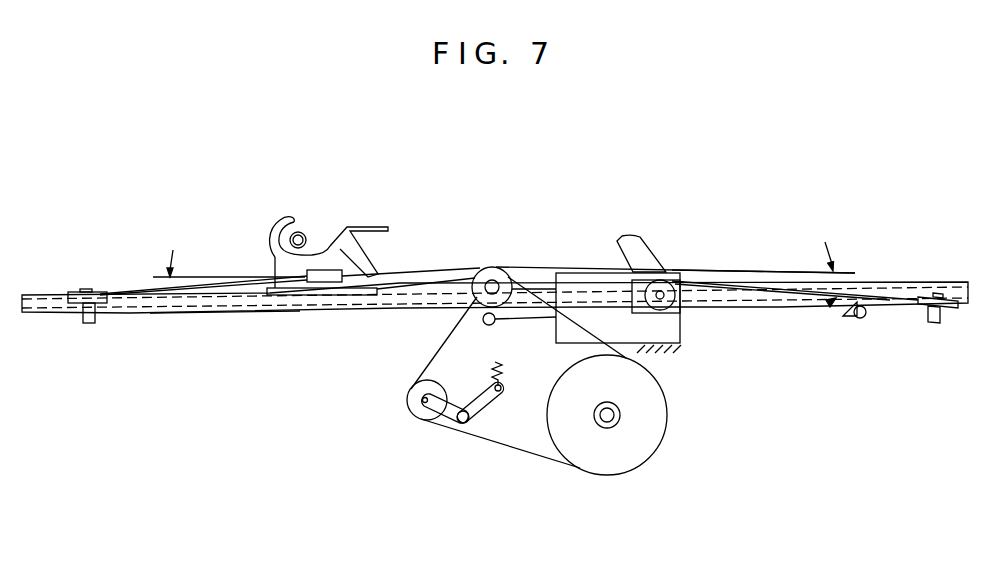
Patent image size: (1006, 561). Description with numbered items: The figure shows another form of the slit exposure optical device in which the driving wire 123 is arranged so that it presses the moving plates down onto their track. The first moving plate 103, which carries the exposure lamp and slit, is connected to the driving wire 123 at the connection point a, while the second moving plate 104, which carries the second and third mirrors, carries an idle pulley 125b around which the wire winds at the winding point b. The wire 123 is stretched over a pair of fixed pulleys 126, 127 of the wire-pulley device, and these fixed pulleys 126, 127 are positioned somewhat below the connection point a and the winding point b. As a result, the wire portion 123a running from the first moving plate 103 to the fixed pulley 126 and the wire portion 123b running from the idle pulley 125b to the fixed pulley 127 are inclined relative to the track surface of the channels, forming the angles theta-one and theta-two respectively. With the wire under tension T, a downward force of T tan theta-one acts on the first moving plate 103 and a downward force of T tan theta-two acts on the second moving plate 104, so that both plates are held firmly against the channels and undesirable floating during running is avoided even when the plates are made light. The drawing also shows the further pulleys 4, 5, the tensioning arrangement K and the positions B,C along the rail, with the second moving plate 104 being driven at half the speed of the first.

The driving wire 123 is at (435, 268).
The portion of the driving wire 123a is at (225, 282).
The portion of the driving wire 123b is at (880, 300).
The pulley 4 is at (495, 268).
The drive pulley 5 is at (630, 467).
The first moving plate 103 is at (330, 246).
The second moving plate 104 is at (648, 243).
The point of connection of the wire a is at (305, 270).
The point of winding of the wire b is at (668, 282).
The idle pulley 125b is at (705, 272).
The fixed pulley 126 is at (78, 312).
The fixed pulley 127 is at (948, 312).
The positions on rail B,C is at (218, 311).
The tension mechanism K is at (482, 460).